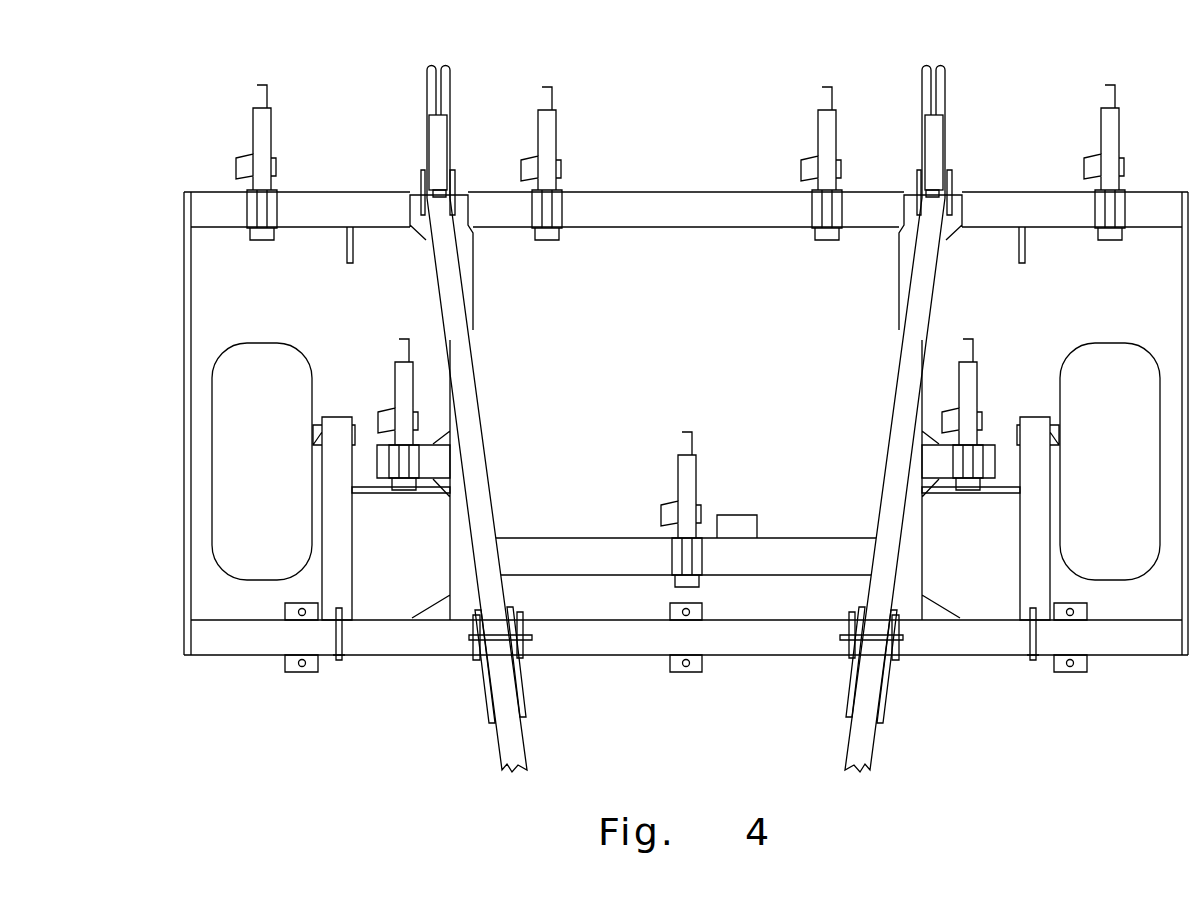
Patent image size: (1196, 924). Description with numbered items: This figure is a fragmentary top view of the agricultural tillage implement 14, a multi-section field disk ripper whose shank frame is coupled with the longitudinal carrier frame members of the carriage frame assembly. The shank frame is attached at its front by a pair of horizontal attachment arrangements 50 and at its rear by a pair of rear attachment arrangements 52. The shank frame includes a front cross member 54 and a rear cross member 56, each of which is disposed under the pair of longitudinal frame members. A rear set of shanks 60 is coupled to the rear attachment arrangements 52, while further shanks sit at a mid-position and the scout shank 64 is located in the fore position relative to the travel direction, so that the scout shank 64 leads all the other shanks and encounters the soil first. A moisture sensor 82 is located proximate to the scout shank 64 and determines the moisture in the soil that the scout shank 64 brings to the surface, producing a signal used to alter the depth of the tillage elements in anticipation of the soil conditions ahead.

The agricultural tillage implement 14 is at (365, 698).
The horizontal attachment arrangements 50 is at (547, 665).
The rear attachment arrangements 52 is at (485, 210).
The front cross member 54 is at (222, 648).
The rear cross member 56 is at (210, 200).
The rear set of shanks 60 is at (818, 110).
The scout shank 64 is at (698, 465).
The moisture sensor 82 is at (747, 515).